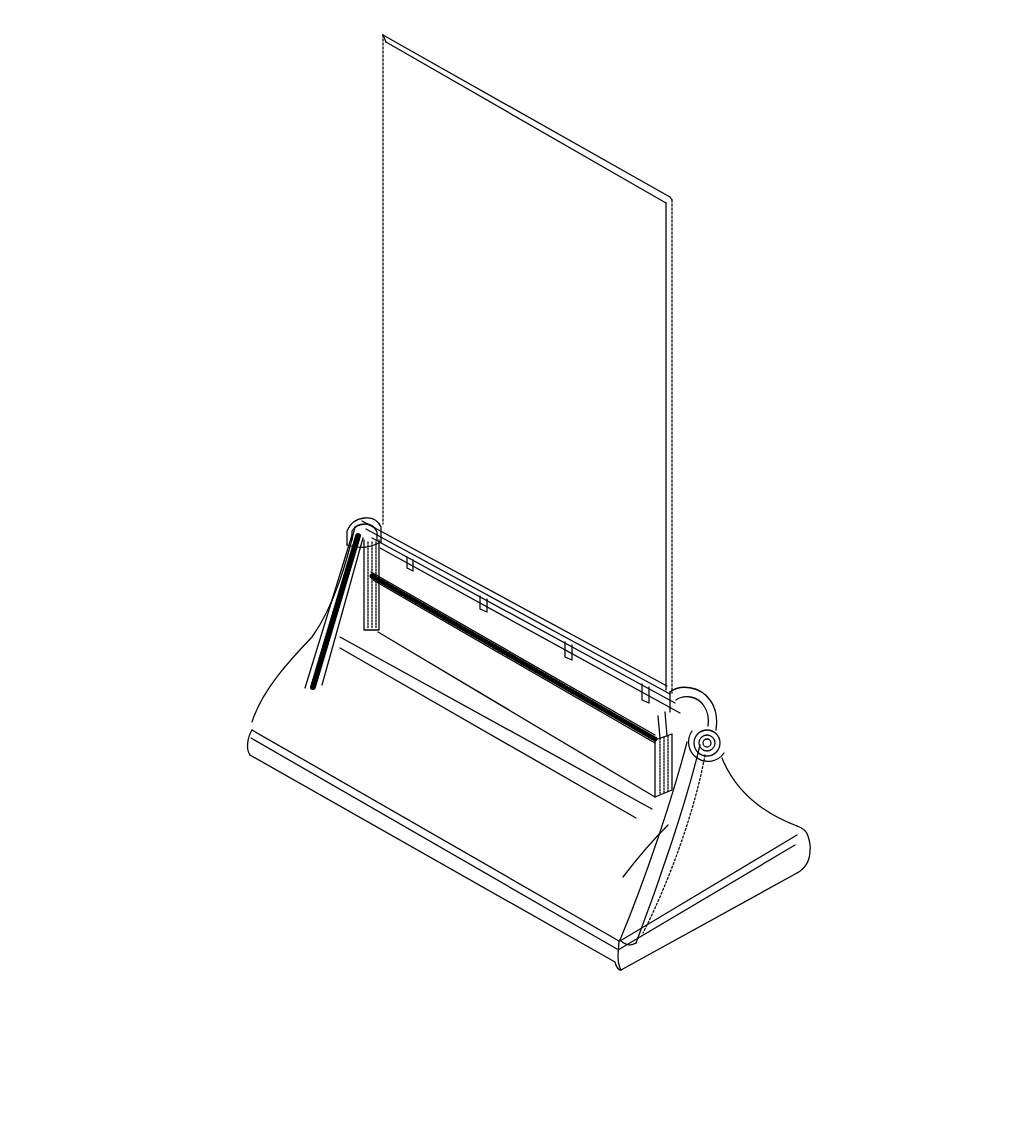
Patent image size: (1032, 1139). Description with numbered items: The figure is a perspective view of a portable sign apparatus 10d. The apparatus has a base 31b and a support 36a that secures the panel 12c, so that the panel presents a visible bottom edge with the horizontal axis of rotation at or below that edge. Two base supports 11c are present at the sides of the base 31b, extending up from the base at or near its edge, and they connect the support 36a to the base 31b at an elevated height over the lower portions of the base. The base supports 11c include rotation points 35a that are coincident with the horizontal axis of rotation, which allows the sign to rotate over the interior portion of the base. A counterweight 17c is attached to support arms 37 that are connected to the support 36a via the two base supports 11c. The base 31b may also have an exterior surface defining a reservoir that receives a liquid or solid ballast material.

The portable sign apparatus 10d is at (565, 97).
The panel 12c is at (673, 523).
The counterweight 17c is at (490, 668).
The support arms 37 is at (365, 611).
The base supports 11c is at (342, 572).
The support 36a is at (697, 700).
The rotation points 35a is at (720, 740).
The base 31b is at (380, 743).